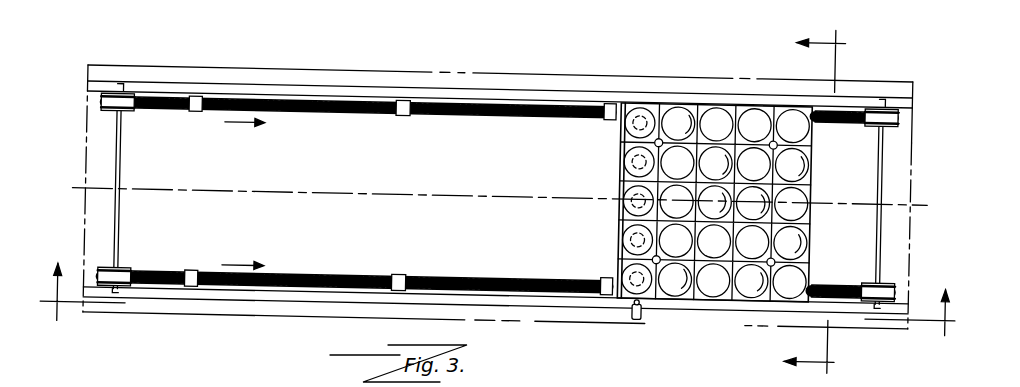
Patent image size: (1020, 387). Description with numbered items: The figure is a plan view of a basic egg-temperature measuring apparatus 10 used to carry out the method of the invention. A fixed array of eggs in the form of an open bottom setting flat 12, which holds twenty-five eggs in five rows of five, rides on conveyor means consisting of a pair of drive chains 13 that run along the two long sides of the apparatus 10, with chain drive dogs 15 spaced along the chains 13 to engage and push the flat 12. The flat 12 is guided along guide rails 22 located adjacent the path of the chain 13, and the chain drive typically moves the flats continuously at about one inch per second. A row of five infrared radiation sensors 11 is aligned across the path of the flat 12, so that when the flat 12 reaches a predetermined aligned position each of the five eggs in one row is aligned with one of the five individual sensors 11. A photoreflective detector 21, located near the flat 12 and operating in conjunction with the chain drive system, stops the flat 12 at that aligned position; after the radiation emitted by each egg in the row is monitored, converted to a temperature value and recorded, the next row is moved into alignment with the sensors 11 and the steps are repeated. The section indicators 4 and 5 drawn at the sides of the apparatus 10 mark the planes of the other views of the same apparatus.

The apparatus 10 is at (657, 53).
The infrared radiation sensors 11 is at (620, 226).
The open bottom setting flat 12 is at (762, 92).
The drive chains 13 is at (326, 108).
The chain drive dogs 15 is at (197, 109).
The photoreflective detector 21 is at (646, 308).
The guide rails 22 is at (527, 78).
The section line 4- 4 is at (497, 315).
The section line 5- 5 is at (826, 205).